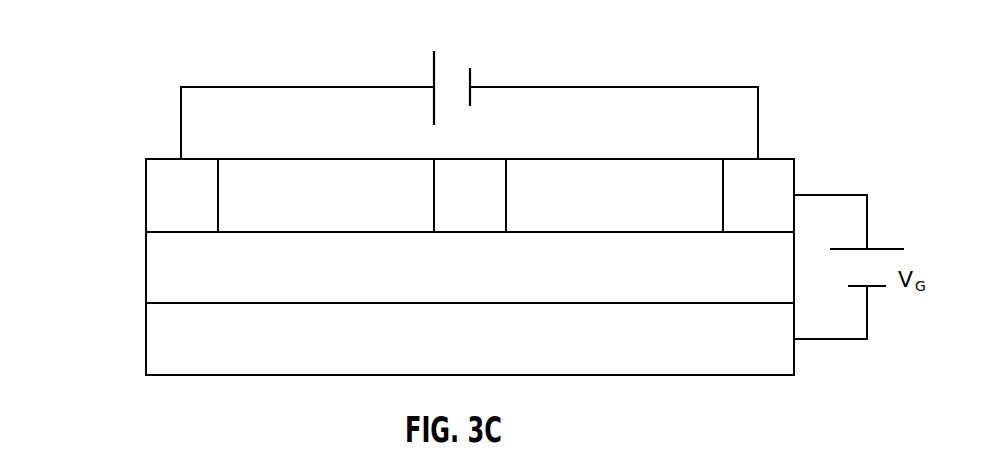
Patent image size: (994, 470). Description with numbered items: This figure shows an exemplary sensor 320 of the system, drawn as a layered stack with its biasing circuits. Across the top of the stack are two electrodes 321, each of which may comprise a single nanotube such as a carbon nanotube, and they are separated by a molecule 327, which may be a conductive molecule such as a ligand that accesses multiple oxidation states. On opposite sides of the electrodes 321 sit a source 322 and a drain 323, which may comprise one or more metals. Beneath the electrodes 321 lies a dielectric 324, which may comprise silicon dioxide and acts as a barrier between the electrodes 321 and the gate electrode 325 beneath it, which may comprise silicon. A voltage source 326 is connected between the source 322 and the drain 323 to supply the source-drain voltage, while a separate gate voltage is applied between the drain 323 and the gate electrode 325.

The sensor 320 is at (121, 55).
The electrodes 321 is at (306, 207).
The source 322 is at (162, 207).
The drain 323 is at (738, 207).
The dielectric 324 is at (450, 277).
The gate electrode 325 is at (450, 349).
The source-drain voltage source 326 is at (540, 79).
The molecule 327 is at (450, 207).